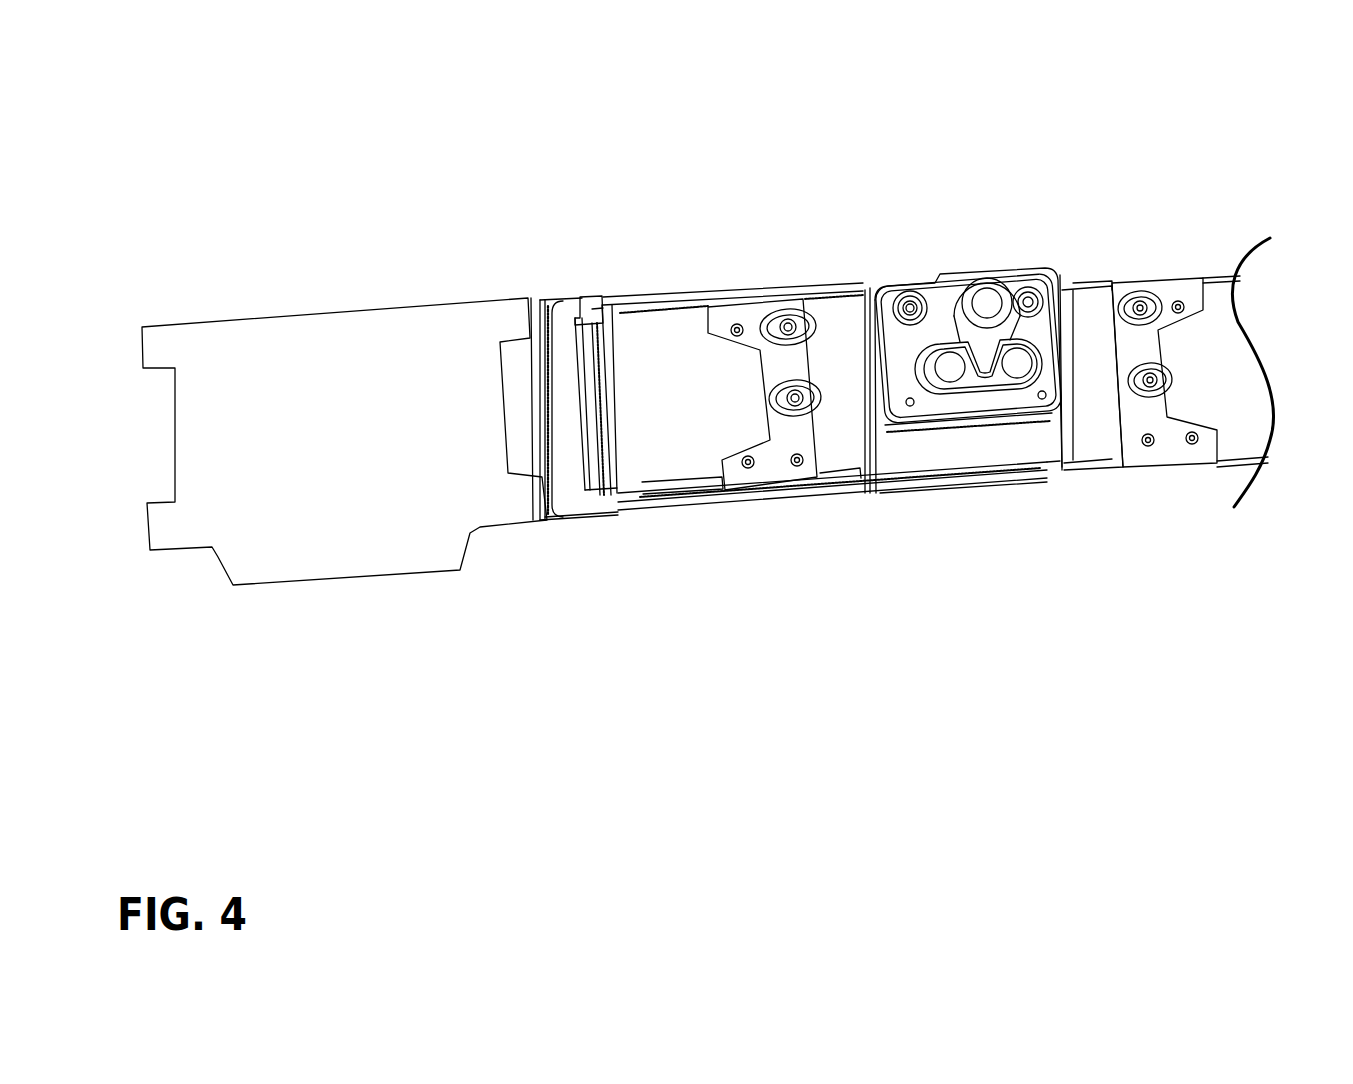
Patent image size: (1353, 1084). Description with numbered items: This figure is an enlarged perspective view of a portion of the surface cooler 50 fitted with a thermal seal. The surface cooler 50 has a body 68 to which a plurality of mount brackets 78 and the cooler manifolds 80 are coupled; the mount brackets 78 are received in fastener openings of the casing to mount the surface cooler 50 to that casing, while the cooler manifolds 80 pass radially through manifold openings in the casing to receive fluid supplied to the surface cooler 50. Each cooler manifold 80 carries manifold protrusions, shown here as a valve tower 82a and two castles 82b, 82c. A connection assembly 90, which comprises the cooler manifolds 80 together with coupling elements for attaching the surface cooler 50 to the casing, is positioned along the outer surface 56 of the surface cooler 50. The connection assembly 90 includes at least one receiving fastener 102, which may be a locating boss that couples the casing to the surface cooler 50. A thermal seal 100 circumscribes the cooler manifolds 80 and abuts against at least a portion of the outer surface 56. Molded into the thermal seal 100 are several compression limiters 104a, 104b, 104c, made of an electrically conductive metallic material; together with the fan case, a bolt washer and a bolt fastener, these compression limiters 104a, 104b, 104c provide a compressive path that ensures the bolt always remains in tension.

The surface cooler 50 is at (543, 203).
The outer surface 56 is at (953, 460).
The body 68 is at (1080, 433).
The mount bracket 78 is at (722, 320).
The cooler manifold 80 is at (983, 270).
The valve tower 82a is at (1000, 283).
The castle 82b is at (950, 367).
The castle 82c is at (1017, 363).
The connection assembly 90 is at (962, 255).
The thermal seal 100 is at (1007, 403).
The receiving fastener 102 is at (895, 297).
The compression limiter 104a is at (1032, 283).
The compression limiter 104b is at (907, 293).
The compression limiter 104c is at (908, 406).